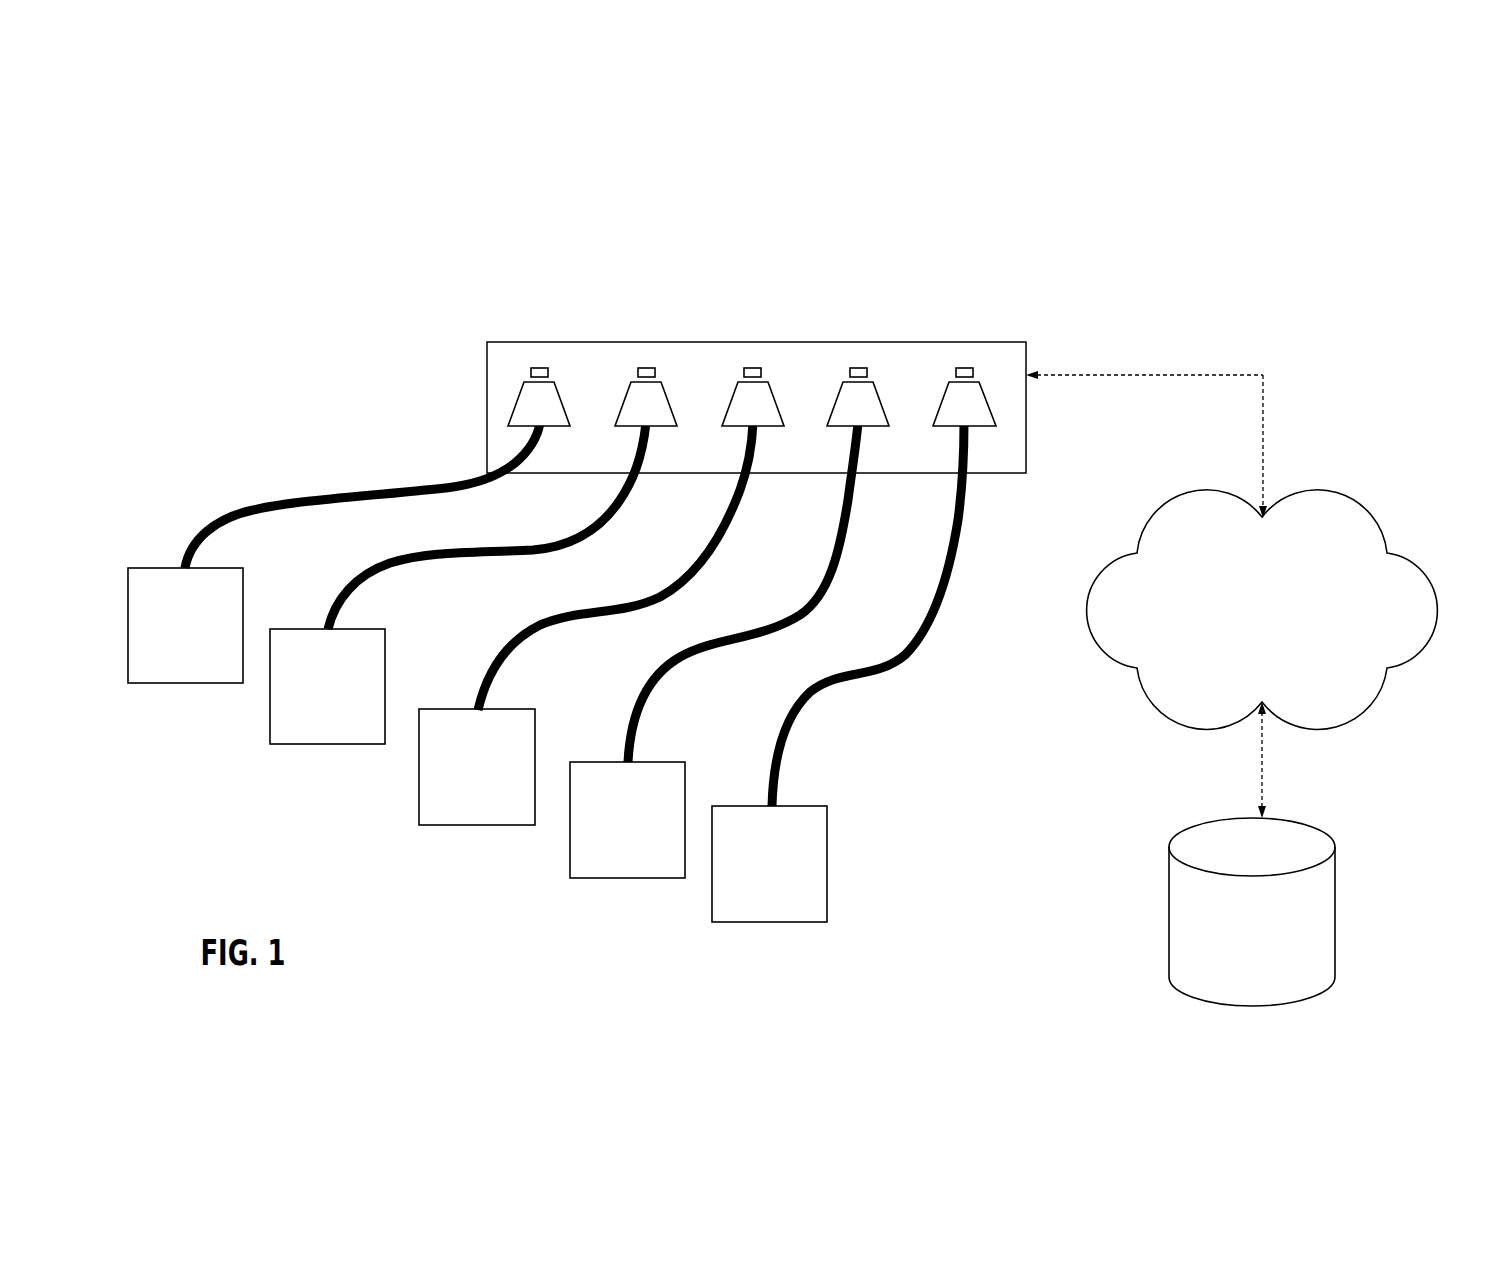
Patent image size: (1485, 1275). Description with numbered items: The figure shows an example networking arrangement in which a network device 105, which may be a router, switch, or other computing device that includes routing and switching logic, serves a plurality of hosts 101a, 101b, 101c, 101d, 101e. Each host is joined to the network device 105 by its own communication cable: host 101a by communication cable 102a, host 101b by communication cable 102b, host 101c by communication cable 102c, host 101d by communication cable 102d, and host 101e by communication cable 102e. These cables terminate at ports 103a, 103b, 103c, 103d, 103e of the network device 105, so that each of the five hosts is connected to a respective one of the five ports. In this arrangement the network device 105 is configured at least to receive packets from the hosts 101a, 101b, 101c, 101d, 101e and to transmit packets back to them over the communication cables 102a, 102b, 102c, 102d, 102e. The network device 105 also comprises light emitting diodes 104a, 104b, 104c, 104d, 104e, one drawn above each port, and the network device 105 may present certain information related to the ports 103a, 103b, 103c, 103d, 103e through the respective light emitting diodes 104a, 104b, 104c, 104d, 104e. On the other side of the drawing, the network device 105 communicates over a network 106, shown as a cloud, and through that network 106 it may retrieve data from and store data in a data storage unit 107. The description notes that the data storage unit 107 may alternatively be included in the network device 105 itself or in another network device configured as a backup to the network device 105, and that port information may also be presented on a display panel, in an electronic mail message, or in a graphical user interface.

The host 101a is at (164, 639).
The host 101b is at (304, 700).
The host 101c is at (455, 782).
The host 101d is at (605, 835).
The host 101e is at (747, 877).
The communication cable 102a is at (302, 497).
The communication cable 102b is at (512, 553).
The communication cable 102c is at (645, 603).
The communication cable 102d is at (795, 608).
The communication cable 102e is at (913, 632).
The port 103a is at (523, 387).
The port 103b is at (627, 392).
The port 103c is at (737, 392).
The port 103d is at (840, 392).
The port 103e is at (947, 392).
The light emitting diode 104a is at (536, 368).
The light emitting diode 104b is at (643, 368).
The light emitting diode 104c is at (753, 368).
The light emitting diode 104d is at (863, 368).
The light emitting diode 104e is at (968, 368).
The network device 105 is at (487, 408).
The network 106 is at (1244, 612).
The data storage unit 107 is at (1235, 930).